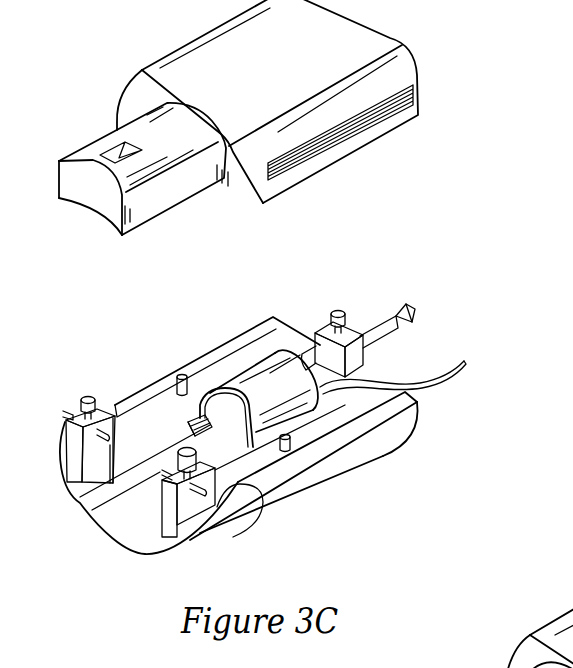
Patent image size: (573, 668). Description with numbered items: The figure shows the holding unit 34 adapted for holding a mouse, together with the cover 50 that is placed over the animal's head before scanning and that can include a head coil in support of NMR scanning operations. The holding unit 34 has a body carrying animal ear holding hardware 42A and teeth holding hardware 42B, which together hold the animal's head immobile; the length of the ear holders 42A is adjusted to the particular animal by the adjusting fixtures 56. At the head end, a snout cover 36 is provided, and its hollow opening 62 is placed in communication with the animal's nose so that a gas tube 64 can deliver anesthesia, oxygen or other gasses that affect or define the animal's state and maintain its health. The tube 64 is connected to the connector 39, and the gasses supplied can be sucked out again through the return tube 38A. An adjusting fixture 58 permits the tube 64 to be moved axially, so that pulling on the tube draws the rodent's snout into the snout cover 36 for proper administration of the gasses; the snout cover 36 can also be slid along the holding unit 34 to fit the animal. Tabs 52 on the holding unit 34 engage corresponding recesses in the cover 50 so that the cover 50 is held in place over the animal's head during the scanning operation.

The cover 50 is at (347, 156).
The holding unit 34 is at (88, 336).
The animal ear holding hardware 42A is at (100, 432).
The teeth holding hardware 42B is at (100, 490).
The adjusting fixture 56 is at (90, 396).
The tube 64 is at (310, 358).
The snout cover 36 is at (258, 437).
The hollow opening 62 is at (213, 403).
The adjusting fixture 58 is at (336, 310).
The connector 39 is at (400, 306).
The return tube/conduit 38A is at (437, 383).
The tab 52 is at (182, 374).